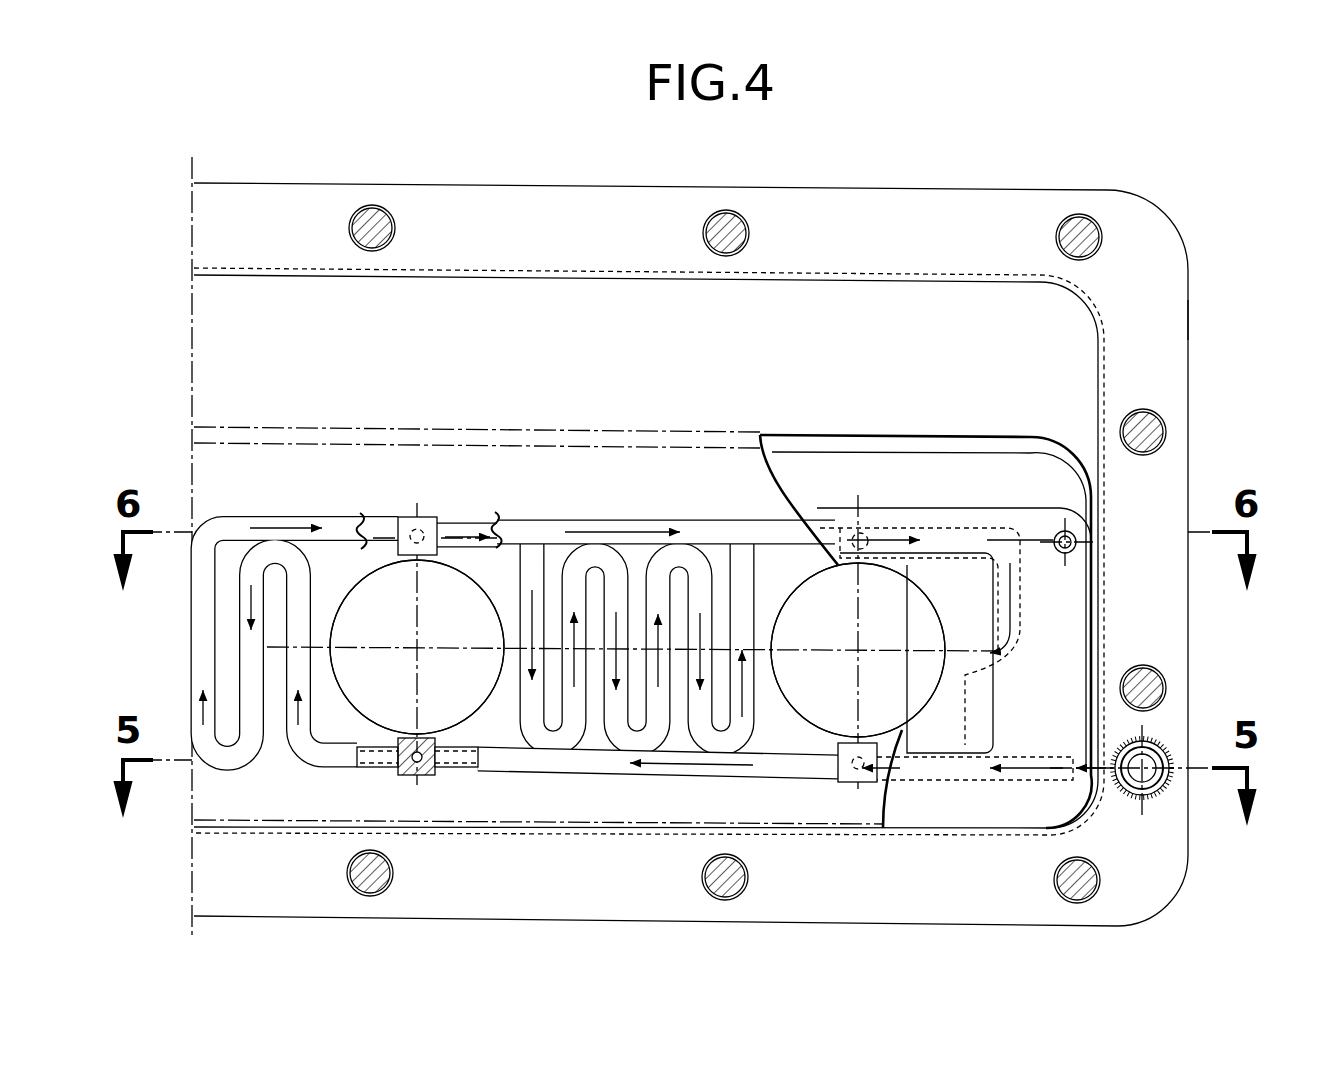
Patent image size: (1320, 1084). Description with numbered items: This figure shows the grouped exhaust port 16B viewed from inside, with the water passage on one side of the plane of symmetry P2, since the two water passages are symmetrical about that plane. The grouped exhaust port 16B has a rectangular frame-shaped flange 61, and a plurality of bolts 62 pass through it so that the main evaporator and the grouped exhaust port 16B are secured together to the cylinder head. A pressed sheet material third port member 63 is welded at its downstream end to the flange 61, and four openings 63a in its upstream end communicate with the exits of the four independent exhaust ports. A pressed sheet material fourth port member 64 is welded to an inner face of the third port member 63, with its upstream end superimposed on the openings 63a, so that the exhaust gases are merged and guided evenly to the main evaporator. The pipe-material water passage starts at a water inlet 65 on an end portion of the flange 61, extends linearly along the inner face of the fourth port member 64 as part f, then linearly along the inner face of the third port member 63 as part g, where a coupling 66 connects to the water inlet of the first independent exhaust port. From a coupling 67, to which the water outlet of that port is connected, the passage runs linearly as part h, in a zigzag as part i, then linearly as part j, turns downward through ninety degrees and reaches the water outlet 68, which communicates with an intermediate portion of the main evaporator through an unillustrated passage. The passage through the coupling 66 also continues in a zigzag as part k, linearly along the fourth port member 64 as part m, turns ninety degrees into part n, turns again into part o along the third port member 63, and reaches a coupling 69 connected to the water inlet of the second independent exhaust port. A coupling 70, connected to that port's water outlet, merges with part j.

The grouped exhaust port 16B is at (1165, 204).
The flange 61 is at (1177, 323).
The bolts 62 is at (370, 218).
The third port member 63 is at (648, 371).
The openings 63a is at (365, 578).
The fourth port member 64 is at (908, 463).
The water inlet 65 is at (1152, 782).
The coupling 66 is at (404, 776).
The coupling 67 is at (412, 517).
The water outlet 68 is at (1072, 563).
The coupling 69 is at (840, 783).
The coupling 70 is at (892, 508).
The plane of symmetry P2 is at (192, 350).
The part f is at (654, 774).
The part g is at (458, 770).
The part h is at (467, 523).
The part i is at (570, 545).
The part j is at (968, 512).
The part k is at (263, 720).
The part m is at (622, 519).
The part n is at (1007, 652).
The part o is at (930, 788).